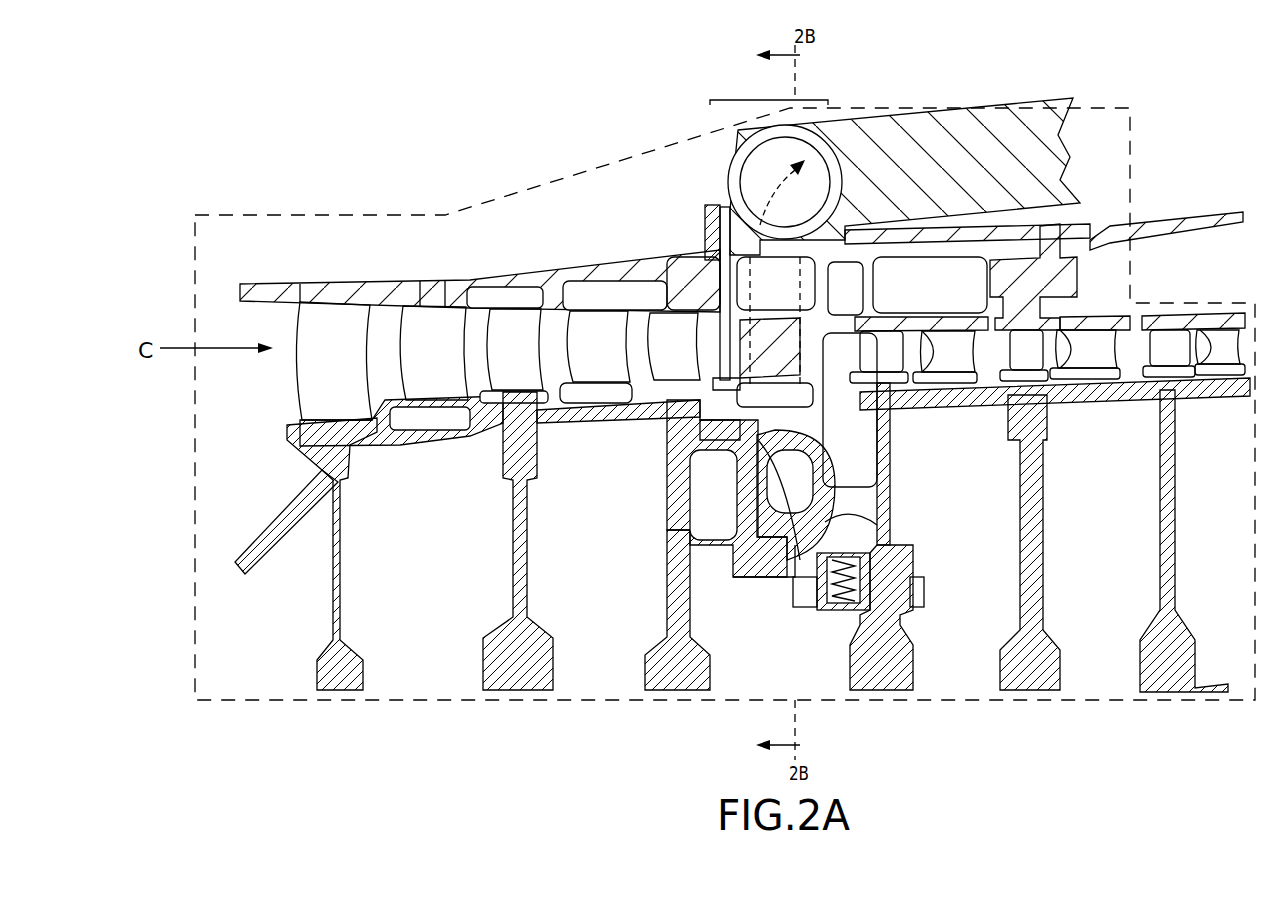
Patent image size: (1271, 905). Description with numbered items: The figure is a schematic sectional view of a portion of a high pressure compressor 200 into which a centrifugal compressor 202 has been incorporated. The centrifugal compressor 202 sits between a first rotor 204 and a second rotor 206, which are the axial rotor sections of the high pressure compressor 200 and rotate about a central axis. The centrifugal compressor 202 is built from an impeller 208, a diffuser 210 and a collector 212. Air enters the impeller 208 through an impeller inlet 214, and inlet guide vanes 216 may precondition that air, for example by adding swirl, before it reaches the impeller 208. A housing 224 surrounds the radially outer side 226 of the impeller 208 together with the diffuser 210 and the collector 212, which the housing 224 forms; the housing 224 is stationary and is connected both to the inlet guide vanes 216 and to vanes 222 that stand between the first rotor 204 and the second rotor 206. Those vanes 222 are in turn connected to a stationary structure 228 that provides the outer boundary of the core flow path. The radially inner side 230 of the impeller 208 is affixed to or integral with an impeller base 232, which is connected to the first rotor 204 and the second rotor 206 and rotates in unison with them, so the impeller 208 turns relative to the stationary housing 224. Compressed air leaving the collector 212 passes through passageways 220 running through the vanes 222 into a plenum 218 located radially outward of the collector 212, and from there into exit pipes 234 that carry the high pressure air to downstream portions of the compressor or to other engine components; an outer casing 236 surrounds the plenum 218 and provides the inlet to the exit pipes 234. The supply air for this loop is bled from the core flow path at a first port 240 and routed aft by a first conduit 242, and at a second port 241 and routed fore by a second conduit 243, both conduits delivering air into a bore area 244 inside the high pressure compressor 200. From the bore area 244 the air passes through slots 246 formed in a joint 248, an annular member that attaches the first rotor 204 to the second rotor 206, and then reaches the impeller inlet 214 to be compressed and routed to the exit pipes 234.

The high pressure compressor 200 is at (448, 126).
The centrifugal compressor 202 is at (765, 98).
The first rotor 204 is at (648, 430).
The second rotor 206 is at (905, 410).
The impeller 208 is at (775, 545).
The diffuser 210 is at (713, 495).
The collector 212 is at (815, 392).
The impeller inlet 214 is at (868, 522).
The inlet guide vanes 216 is at (790, 600).
The plenum 218 is at (800, 292).
The passageways 220 is at (740, 343).
The vanes 222 is at (725, 318).
The housing 224 is at (780, 437).
The radially outer side 226 is at (757, 540).
The stationary structure 228 is at (556, 280).
The radially inner side 230 is at (747, 513).
The impeller base 232 is at (750, 538).
The exit pipes 234 is at (742, 155).
The outer casing 236 is at (745, 215).
The first port 240 is at (1140, 302).
The second port 241 is at (985, 305).
The first conduit 242 is at (1255, 503).
The second conduit 243 is at (198, 242).
The bore area 244 is at (815, 643).
The slots 246 is at (857, 573).
The joint 248 is at (870, 586).